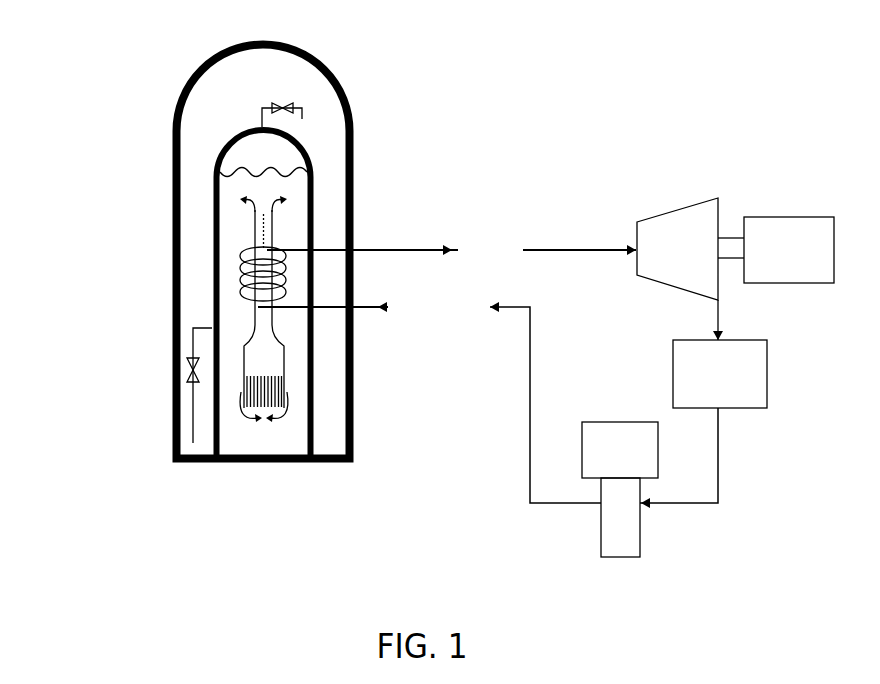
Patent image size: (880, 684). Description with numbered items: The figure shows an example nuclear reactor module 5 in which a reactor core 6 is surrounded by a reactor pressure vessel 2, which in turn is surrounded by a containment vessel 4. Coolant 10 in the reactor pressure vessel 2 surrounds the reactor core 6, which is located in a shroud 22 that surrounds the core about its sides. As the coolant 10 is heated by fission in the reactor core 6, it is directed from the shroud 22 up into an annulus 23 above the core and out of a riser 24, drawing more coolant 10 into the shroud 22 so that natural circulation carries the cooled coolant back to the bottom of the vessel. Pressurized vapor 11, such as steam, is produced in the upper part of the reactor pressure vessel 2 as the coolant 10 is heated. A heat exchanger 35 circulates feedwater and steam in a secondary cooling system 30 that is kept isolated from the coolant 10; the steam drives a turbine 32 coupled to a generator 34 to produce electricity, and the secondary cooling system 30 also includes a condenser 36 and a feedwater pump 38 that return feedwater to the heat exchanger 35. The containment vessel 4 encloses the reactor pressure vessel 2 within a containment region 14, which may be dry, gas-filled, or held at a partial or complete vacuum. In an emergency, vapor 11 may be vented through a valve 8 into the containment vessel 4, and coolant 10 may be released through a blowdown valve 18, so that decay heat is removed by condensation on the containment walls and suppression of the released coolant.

The reactor pressure vessel 2 is at (359, 293).
The containment vessel 4 is at (330, 251).
The nuclear reactor module 5 is at (155, 133).
The reactor core 6 is at (338, 409).
The valve 8 is at (376, 78).
The coolant 10 is at (159, 169).
The pressurized vapor 11 is at (169, 103).
The containment region 14 is at (224, 101).
The blowdown valve 18 is at (125, 363).
The shroud 22 is at (348, 366).
The annulus 23 is at (345, 277).
The riser 24 is at (451, 233).
The secondary cooling system 30 is at (672, 185).
The turbine 32 is at (666, 256).
The generator 34 is at (781, 256).
The heat exchanger 35 is at (172, 253).
The condenser 36 is at (705, 389).
The feedwater pump 38 is at (609, 457).